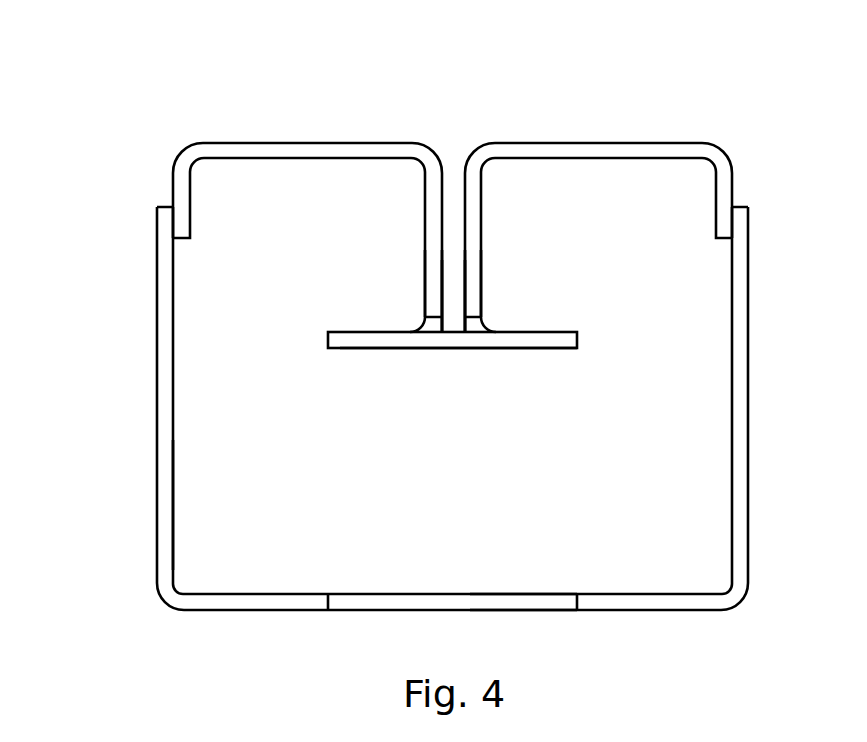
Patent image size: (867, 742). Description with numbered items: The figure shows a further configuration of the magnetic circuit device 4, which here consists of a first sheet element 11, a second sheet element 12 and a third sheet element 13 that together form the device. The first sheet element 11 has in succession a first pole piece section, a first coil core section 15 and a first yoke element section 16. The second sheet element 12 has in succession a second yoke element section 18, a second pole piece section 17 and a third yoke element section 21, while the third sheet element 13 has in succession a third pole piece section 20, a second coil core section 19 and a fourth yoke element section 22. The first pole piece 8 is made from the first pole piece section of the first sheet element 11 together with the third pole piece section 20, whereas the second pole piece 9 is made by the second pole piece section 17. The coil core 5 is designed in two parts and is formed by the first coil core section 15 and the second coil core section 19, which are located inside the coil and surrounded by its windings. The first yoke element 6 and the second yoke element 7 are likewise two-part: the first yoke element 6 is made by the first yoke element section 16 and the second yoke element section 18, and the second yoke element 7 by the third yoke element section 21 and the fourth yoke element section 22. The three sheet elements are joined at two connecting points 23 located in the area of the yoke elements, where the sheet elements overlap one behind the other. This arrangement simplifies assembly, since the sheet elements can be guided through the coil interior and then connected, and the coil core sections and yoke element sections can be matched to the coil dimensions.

The magnetic circuit device 4 is at (92, 143).
The coil core 5 is at (500, 298).
The first yoke element 6 is at (157, 393).
The second yoke element 7 is at (748, 389).
The first pole piece 8 is at (548, 353).
The second pole piece 9 is at (347, 612).
The first sheet element 11 is at (372, 140).
The second sheet element 12 is at (220, 605).
The third sheet element 13 is at (577, 140).
The first coil core section 15 is at (442, 286).
The first yoke element section 16 is at (255, 153).
The second pole piece section 17 is at (513, 603).
The second yoke element section 18 is at (163, 508).
The second coil core section 19 is at (477, 288).
The third pole piece section 20 is at (388, 340).
The third yoke element section 21 is at (683, 605).
The fourth yoke element section 22 is at (662, 153).
The connecting points 23 is at (167, 197).